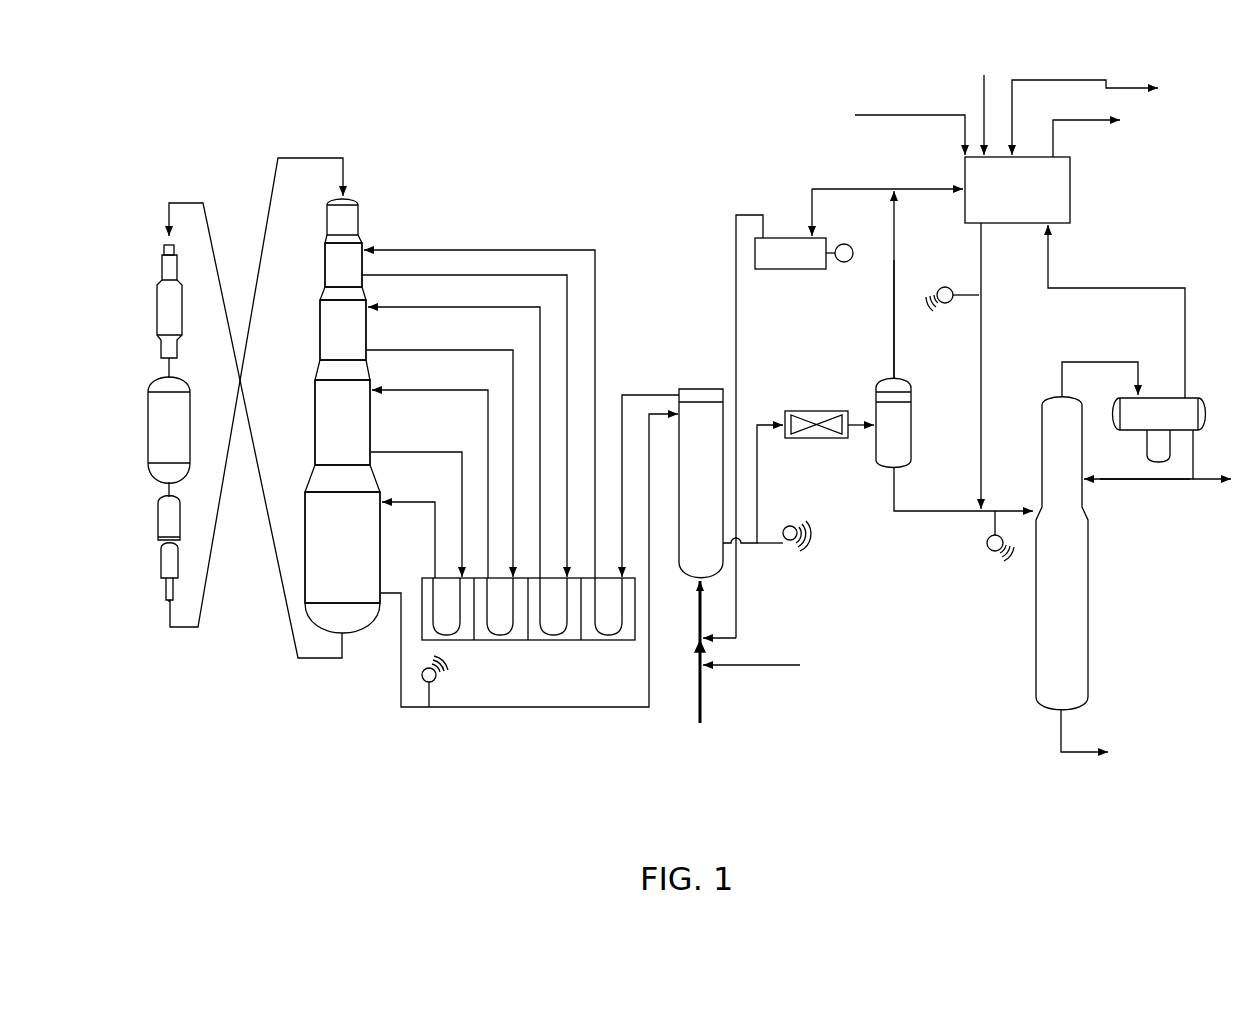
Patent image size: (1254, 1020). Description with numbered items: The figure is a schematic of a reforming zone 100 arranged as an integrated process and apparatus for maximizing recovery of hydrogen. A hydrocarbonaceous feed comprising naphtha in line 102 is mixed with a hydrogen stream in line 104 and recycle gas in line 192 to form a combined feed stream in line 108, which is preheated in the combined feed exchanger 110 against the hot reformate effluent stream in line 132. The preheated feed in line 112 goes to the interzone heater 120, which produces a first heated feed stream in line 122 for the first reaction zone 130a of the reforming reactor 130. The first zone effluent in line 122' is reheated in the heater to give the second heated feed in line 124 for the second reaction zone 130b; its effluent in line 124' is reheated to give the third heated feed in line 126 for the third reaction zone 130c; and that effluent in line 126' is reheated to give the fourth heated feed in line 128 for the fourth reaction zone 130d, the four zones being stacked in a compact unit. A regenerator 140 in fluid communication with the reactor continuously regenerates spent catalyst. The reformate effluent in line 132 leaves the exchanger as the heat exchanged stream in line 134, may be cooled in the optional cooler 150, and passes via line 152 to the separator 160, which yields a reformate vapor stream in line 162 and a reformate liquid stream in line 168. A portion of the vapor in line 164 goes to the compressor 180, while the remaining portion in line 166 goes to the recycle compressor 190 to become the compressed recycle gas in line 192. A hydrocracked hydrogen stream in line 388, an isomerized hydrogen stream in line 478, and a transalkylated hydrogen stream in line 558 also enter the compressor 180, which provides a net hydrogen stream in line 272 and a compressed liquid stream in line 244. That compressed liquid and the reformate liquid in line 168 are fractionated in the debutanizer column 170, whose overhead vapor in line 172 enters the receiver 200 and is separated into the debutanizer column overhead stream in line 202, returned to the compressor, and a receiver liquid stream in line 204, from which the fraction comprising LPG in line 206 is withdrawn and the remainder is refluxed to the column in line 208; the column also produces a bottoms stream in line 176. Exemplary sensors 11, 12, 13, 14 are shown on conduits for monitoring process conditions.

The reforming zone 100 is at (624, 185).
The reforming reactor 130 is at (360, 217).
The first reaction zone 130a is at (325, 283).
The second reaction zone 130b is at (320, 342).
The third reaction zone 130c is at (315, 417).
The fourth reaction zone 130d is at (400, 557).
The regenerator 140 is at (147, 430).
The line carrying first heated feed stream 122 is at (496, 402).
The line carrying first reaction zone effluent 122' is at (464, 414).
The line carrying second heated feed stream 124 is at (454, 429).
The line carrying second reaction zone effluent 124' is at (439, 450).
The line carrying third heated feed stream 126 is at (430, 471).
The line carrying third reaction zone effluent 126' is at (421, 501).
The line carrying fourth heated feed stream 128 is at (417, 501).
The interzone heater 120 is at (565, 641).
The line carrying reformate effluent stream 132 is at (507, 708).
The sensor 11 is at (431, 701).
The line carrying preheated feed stream 112 is at (650, 394).
The combined feed exchanger 110 is at (700, 388).
The line carrying combined feed stream 108 is at (700, 624).
The line carrying hydrocarbonaceous feed 102 is at (700, 697).
The line carrying hydrogen stream 104 is at (788, 666).
The line carrying compressed reformate vapor stream 192 is at (740, 353).
The line carrying heat exchanged reformate effluent stream 134 is at (778, 497).
The sensor 12 is at (782, 538).
The cooler 150 is at (819, 410).
The line carrying cooled reformate effluent stream 152 is at (858, 433).
The separator 160 is at (912, 427).
The line carrying reformate vapor stream 162 is at (893, 327).
The line carrying portion of reformate vapor stream 164 is at (924, 192).
The line carrying remaining portion of reformate vapor stream 166 is at (867, 188).
The line carrying reformate liquid stream 168 is at (892, 490).
The recycle compressor 190 is at (790, 270).
The compressor 180 is at (1018, 224).
The line carrying hydrocracked hydrogen stream 388 is at (918, 114).
The line carrying isomerized hydrogen stream 478 is at (985, 88).
The line carrying transalkylated hydrogen stream 558 is at (1057, 78).
The line carrying net hydrogen stream 272 is at (1086, 122).
The line carrying compressed liquid stream 244 is at (985, 325).
The sensor 14 is at (974, 300).
The line carrying debutanizer column overhead stream 202 is at (1184, 288).
The sensor 13 is at (994, 525).
The debutanizer column 170 is at (1089, 605).
The line carrying overhead vapor stream 172 is at (1117, 362).
The receiver 200 is at (1205, 416).
The line carrying receiver liquid stream 204 is at (1195, 468).
The line carrying fraction comprising LPG 206 is at (1208, 480).
The line carrying reflux stream 208 is at (1170, 481).
The line carrying debutanizer column bottoms stream 176 is at (1088, 748).